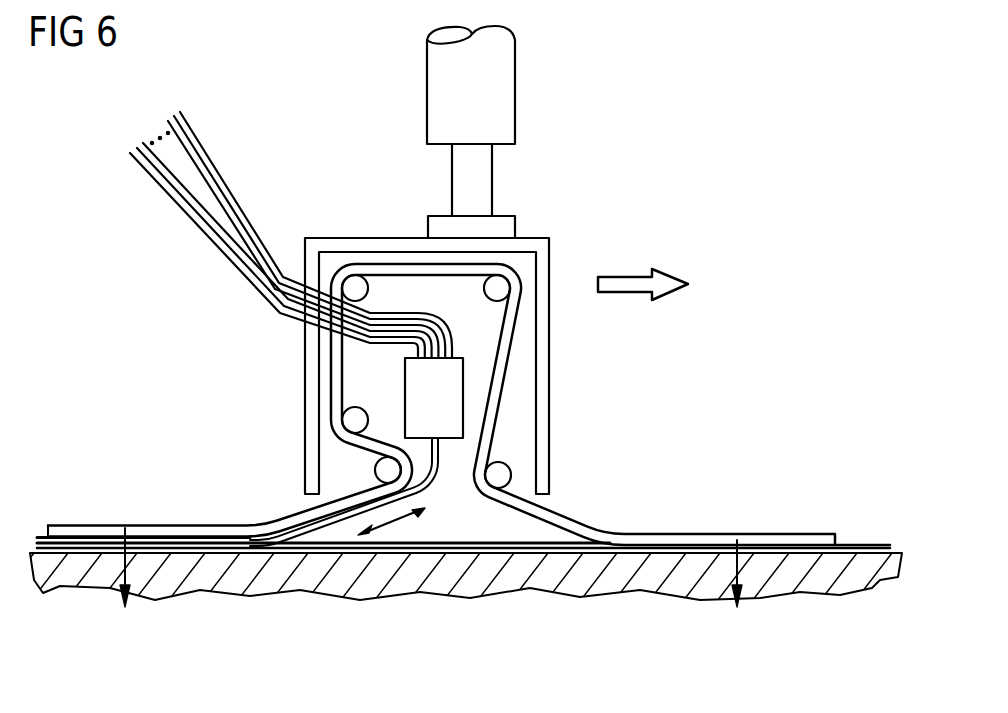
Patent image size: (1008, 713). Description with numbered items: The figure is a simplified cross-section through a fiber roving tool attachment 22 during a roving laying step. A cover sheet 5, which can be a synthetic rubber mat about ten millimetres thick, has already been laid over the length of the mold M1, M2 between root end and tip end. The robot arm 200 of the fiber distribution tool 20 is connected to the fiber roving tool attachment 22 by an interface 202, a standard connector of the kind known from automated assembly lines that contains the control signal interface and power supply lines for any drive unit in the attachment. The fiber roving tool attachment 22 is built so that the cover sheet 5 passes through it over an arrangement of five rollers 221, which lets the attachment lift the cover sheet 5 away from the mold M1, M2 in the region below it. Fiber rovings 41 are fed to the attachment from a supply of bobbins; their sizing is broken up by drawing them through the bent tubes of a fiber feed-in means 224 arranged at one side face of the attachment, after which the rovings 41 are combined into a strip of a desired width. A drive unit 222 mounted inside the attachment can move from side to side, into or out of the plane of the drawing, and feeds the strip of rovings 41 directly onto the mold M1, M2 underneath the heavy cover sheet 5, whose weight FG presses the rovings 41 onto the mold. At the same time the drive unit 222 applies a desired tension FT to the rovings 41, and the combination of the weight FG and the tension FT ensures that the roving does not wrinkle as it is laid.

The fiber distribution tool 20 is at (479, 286).
The fiber roving tool attachment 22 is at (376, 240).
The robot arm 200 is at (505, 87).
The interface 202 is at (502, 228).
The rollers 221 is at (495, 288).
The drive unit 222 is at (450, 385).
The fiber feed-in means 224 is at (368, 335).
The cover sheet 5 is at (210, 527).
The fiber rovings 41 is at (205, 152).
The mold M1 is at (463, 539).
The mold M2 is at (618, 565).
The tension FT is at (395, 522).
The weight of the cover sheet FG is at (130, 573).